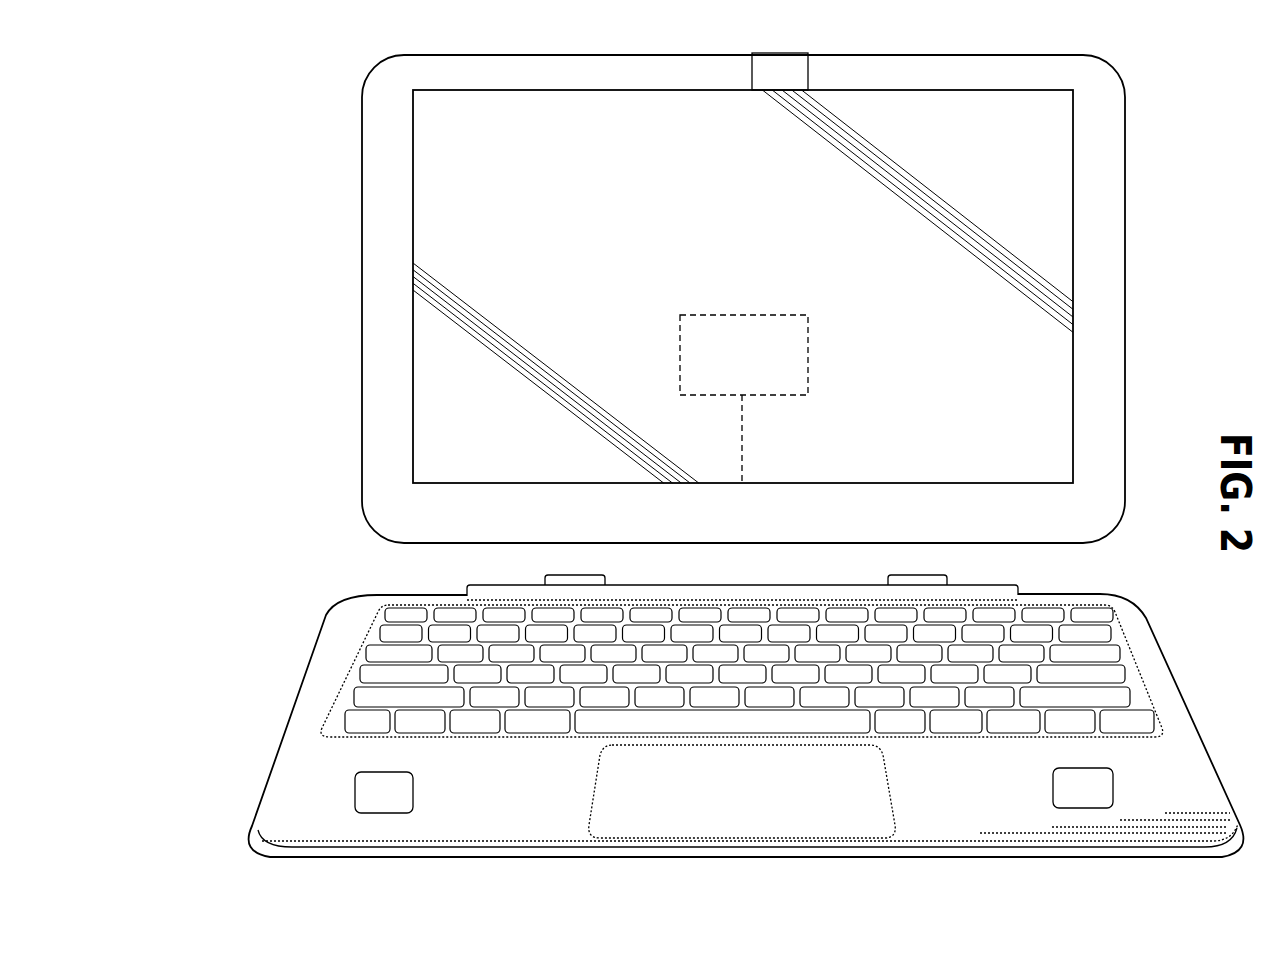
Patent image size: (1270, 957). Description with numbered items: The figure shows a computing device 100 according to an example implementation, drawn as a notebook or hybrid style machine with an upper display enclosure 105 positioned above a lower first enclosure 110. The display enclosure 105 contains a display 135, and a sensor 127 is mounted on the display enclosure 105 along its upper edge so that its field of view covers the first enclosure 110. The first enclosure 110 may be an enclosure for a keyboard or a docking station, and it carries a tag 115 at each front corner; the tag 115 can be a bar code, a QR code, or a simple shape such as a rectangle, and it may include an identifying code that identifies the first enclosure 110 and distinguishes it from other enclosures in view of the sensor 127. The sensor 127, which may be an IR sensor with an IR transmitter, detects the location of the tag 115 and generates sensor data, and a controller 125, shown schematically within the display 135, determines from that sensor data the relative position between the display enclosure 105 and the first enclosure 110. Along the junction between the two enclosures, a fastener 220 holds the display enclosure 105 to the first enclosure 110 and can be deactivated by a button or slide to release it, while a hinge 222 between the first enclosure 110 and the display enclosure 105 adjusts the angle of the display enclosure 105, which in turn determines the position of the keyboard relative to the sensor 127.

The computing device 100 is at (260, 136).
The display enclosure 105 is at (352, 296).
The first enclosure 110 is at (280, 708).
The tag 115 is at (413, 792).
The controller 125 is at (742, 313).
The sensor 127 is at (808, 74).
The display 135 is at (1043, 420).
The fastener 220 is at (745, 584).
The hinge 222 is at (992, 590).